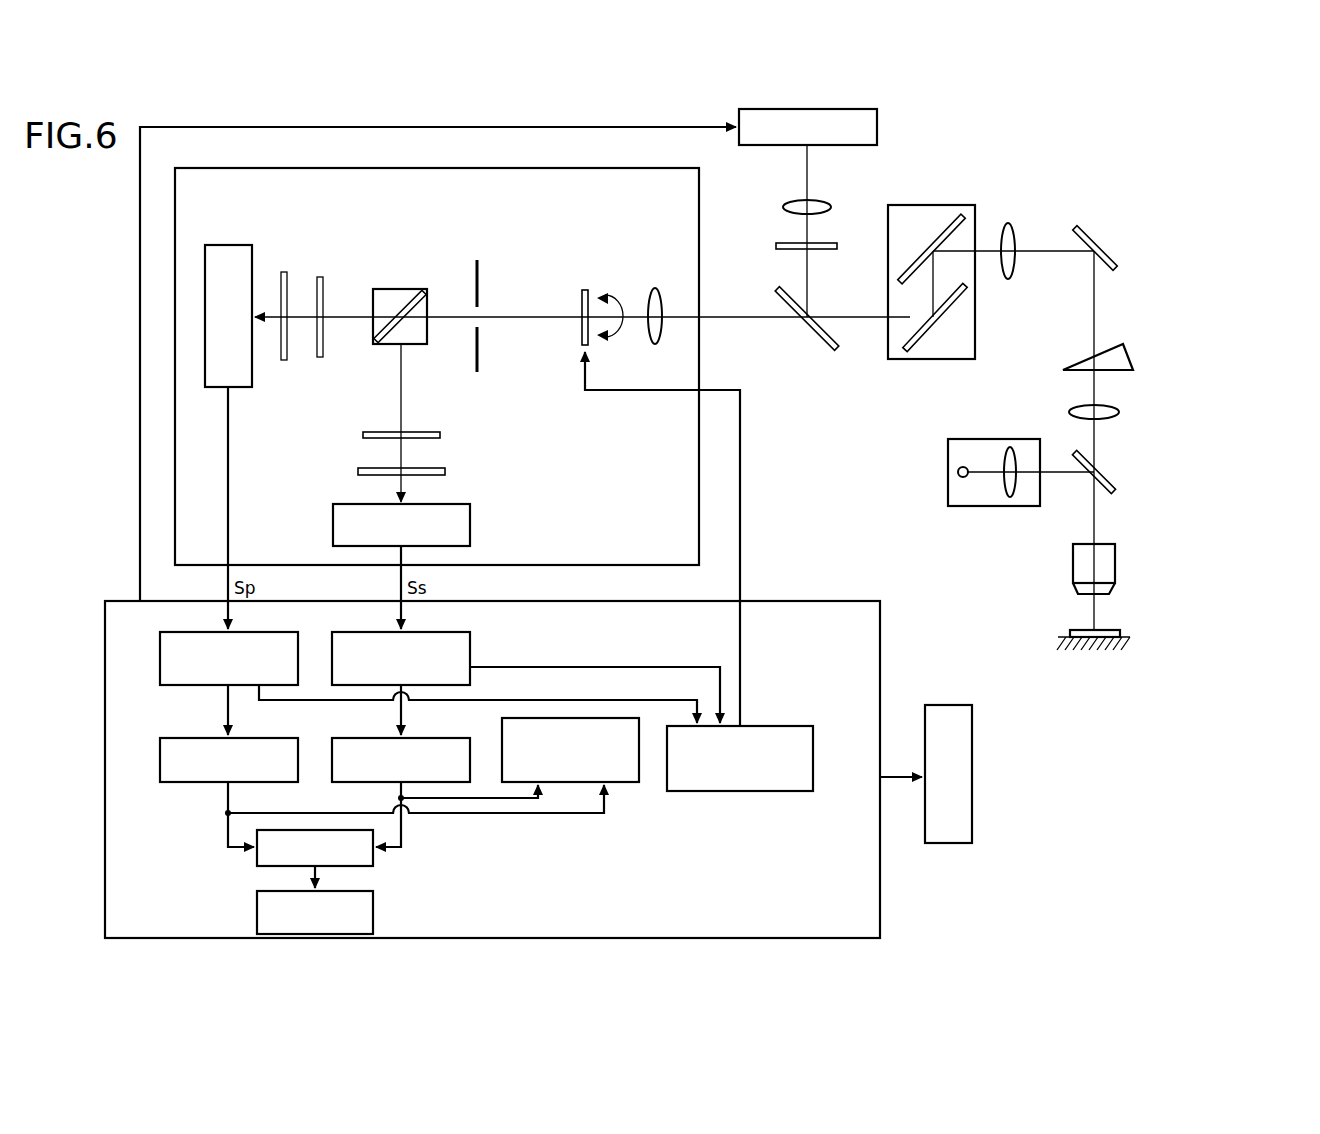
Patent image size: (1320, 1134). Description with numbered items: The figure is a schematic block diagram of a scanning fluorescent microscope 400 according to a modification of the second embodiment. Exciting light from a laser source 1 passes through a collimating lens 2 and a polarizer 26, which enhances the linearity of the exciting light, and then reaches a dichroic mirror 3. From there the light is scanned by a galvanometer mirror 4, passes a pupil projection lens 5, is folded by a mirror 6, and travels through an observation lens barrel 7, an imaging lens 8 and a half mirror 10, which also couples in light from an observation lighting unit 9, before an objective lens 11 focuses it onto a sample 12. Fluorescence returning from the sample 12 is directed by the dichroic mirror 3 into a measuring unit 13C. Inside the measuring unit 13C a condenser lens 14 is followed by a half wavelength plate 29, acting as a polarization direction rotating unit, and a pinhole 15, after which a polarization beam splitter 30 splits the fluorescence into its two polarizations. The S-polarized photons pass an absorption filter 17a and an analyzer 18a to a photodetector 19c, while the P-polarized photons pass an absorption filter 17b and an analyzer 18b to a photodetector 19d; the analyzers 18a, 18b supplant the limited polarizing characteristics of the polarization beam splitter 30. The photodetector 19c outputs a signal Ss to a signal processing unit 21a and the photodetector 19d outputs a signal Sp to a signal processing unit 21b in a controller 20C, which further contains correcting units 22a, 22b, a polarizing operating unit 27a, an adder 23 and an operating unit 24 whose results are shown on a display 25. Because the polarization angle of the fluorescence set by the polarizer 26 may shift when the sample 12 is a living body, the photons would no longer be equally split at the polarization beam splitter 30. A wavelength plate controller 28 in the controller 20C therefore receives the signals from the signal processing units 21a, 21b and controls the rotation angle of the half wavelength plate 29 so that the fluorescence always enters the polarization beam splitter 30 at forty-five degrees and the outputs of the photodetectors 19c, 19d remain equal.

The laser source 1 is at (878, 129).
The collimating lens 2 is at (824, 196).
The dichroic mirror 3 is at (815, 338).
The galvanometer mirror 4 is at (970, 206).
The pupil projection lens 5 is at (1010, 280).
The mirror 6 is at (1096, 236).
The observation lens barrel 7 is at (1135, 355).
The imaging lens 8 is at (1120, 411).
The observation lighting unit 9 is at (992, 507).
The half mirror 10 is at (1114, 480).
The objective lens 11 is at (1116, 563).
The sample 12 is at (1118, 631).
The measuring unit 13C is at (590, 165).
The condenser lens 14 is at (653, 286).
The pinhole 15 is at (480, 355).
The absorption filter 17a is at (441, 433).
The absorption filter 17b is at (320, 360).
The analyzer 18a is at (446, 470).
The analyzer 18b is at (287, 272).
The photodetector 19c is at (471, 525).
The photodetector 19d is at (230, 245).
The controller 20C is at (822, 600).
The signal processing unit 21a is at (448, 634).
The signal processing unit 21b is at (270, 634).
The correcting unit 22a is at (448, 738).
The correcting unit 22b is at (270, 738).
The adder 23 is at (374, 860).
The operating unit 24 is at (374, 906).
The display 25 is at (946, 705).
The polarizer 26 is at (772, 244).
The polarizing operating unit 27a is at (620, 718).
The wavelength plate controller 28 is at (792, 726).
The ½ wavelength plate 29 is at (580, 292).
The polarization beam splitter 30 is at (410, 289).
The scanning fluorescent microscope 400 is at (1172, 184).